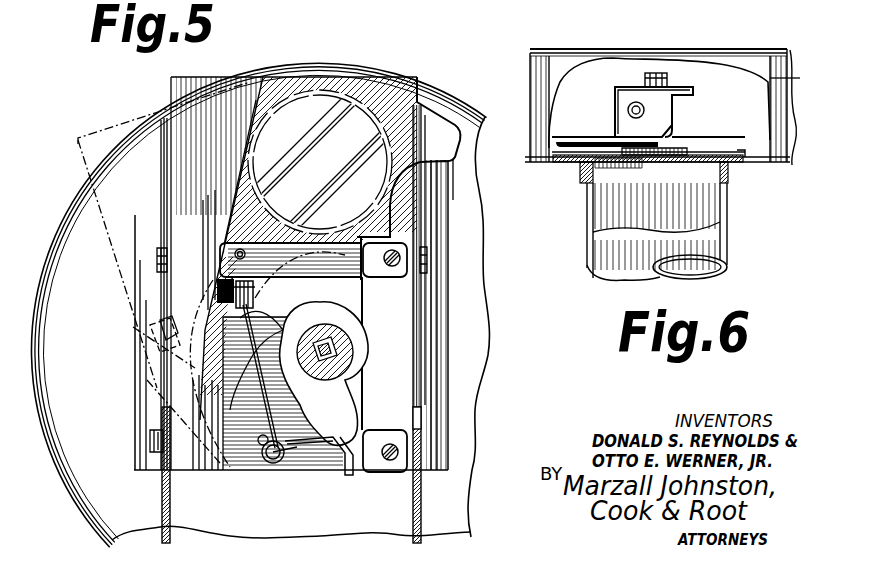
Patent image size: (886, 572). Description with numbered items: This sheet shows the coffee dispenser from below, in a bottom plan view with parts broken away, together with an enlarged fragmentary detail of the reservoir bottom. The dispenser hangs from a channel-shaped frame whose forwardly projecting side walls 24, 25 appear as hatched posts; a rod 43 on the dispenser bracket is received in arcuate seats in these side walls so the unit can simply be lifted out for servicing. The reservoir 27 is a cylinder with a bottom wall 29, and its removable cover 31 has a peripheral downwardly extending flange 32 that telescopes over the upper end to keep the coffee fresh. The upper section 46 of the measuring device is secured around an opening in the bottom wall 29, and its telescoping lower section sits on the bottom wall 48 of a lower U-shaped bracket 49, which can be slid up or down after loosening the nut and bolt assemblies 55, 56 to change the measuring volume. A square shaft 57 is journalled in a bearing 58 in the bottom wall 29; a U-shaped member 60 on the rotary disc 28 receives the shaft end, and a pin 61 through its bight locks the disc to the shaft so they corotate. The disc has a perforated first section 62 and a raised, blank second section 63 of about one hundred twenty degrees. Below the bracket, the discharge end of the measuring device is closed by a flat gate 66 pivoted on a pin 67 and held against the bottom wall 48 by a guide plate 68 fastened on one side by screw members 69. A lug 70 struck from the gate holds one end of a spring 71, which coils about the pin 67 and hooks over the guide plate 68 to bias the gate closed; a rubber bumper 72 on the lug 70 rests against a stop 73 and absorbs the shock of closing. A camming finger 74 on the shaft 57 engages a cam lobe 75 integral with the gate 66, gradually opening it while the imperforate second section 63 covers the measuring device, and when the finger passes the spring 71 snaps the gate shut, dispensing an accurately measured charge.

In FIG. 5, the side wall 24 is at (170, 518).
In FIG. 5, the side wall 25 is at (413, 507).
In FIG. 5, the reservoir 27 is at (500, 90).
In FIG. 6, the reservoir 27 is at (552, 171).
In FIG. 6, the rotary disc 28 is at (737, 139).
In FIG. 5, the bottom wall 29 is at (86, 232).
In FIG. 6, the removable cover 31 is at (668, 33).
In FIG. 5, the peripheral downwardly extending flange 32 is at (90, 200).
In FIG. 5, the rod 43 is at (150, 441).
In FIG. 5, the upper section 46 is at (352, 76).
In FIG. 6, the upper section 46 is at (722, 258).
In FIG. 5, the bottom wall 48 is at (407, 357).
In FIG. 5, the U-shaped bracket 49 is at (422, 290).
In FIG. 5, the nut and bolt assembly 55 is at (157, 262).
In FIG. 5, the nut and bolt assembly 56 is at (428, 247).
In FIG. 5, the shaft 57 is at (357, 352).
In FIG. 6, the bearing 58 is at (660, 85).
In FIG. 6, the U-shaped member 60 is at (660, 118).
In FIG. 6, the pin 61 is at (628, 108).
In FIG. 6, the first section 62 is at (733, 150).
In FIG. 6, the second section 63 is at (578, 136).
In FIG. 5, the gate 66 is at (243, 183).
In FIG. 5, the pin 67 is at (273, 463).
In FIG. 5, the guide plate 68 is at (365, 298).
In FIG. 5, the screw members 69 is at (410, 227).
In FIG. 5, the lug 70 is at (222, 290).
In FIG. 5, the spring 71 is at (258, 376).
In FIG. 5, the rubber bumper 72 is at (236, 294).
In FIG. 5, the stop 73 is at (246, 254).
In FIG. 5, the camming finger 74 is at (337, 417).
In FIG. 5, the cam lobe 75 is at (264, 351).